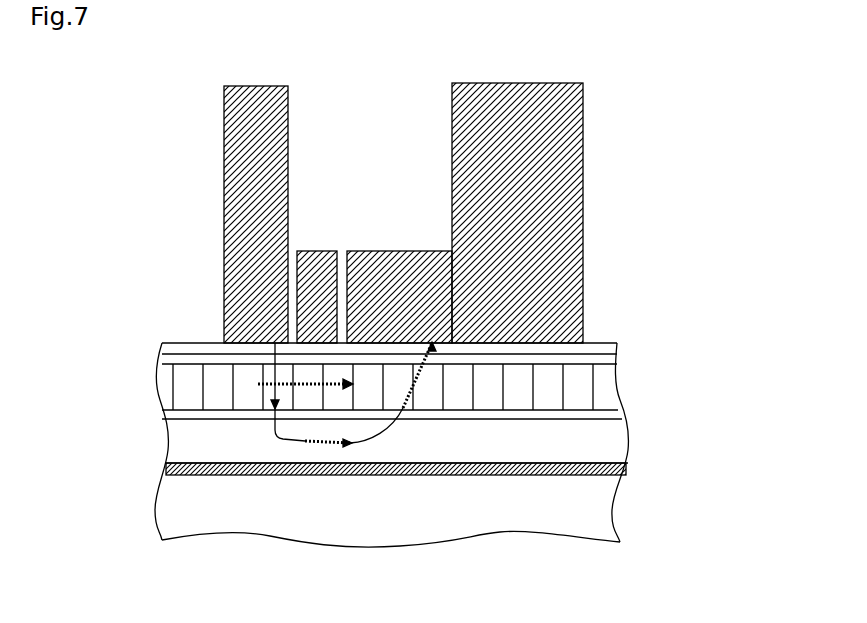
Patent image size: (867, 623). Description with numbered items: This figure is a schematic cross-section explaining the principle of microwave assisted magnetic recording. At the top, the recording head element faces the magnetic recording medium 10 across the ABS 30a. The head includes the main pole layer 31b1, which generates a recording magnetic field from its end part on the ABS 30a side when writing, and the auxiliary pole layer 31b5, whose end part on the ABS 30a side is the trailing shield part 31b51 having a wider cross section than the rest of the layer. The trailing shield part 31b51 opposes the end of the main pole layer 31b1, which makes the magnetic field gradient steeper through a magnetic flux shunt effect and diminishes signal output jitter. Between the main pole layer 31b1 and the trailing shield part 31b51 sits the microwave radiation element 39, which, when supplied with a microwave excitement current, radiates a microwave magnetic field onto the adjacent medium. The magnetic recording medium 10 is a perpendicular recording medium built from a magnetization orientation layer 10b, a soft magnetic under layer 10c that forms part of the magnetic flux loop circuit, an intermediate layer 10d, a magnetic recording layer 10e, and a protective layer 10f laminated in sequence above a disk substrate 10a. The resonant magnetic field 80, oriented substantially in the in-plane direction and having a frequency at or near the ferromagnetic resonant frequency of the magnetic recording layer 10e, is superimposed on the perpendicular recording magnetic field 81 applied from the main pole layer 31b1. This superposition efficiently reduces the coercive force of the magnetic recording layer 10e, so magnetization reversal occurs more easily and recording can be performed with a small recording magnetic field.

The main pole layer 31b1 is at (224, 258).
The microwave radiation element 39 is at (317, 251).
The trailing shield part 31b51 is at (575, 246).
The auxiliary pole layer 31b5 is at (570, 170).
The ABS 30a is at (488, 343).
The magnetic recording medium 10 is at (478, 445).
The protective layer 10f is at (608, 361).
The magnetic recording layer 10e is at (608, 392).
The intermediate layer 10d is at (608, 416).
The soft magnetic under layer 10c is at (608, 445).
The magnetization orientation layer 10b is at (608, 470).
The disk substrate 10a is at (740, 343).
The resonant magnetic field 80 is at (275, 379).
The perpendicular recording magnetic field 81 is at (277, 438).